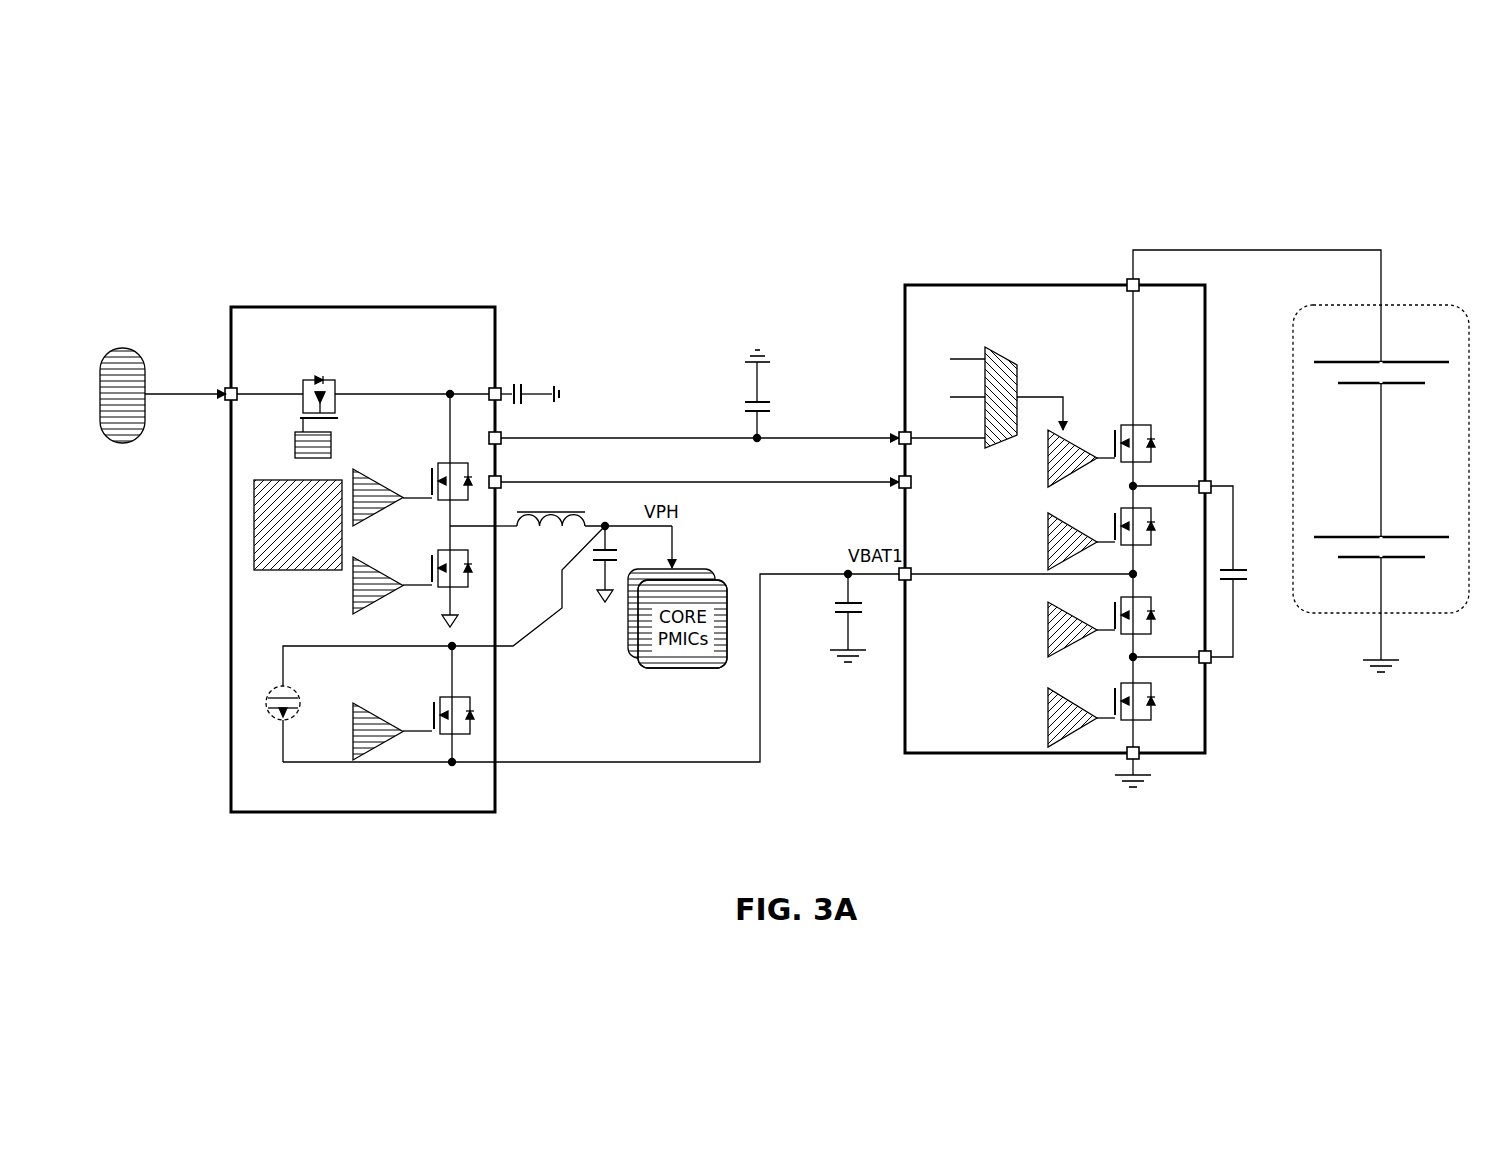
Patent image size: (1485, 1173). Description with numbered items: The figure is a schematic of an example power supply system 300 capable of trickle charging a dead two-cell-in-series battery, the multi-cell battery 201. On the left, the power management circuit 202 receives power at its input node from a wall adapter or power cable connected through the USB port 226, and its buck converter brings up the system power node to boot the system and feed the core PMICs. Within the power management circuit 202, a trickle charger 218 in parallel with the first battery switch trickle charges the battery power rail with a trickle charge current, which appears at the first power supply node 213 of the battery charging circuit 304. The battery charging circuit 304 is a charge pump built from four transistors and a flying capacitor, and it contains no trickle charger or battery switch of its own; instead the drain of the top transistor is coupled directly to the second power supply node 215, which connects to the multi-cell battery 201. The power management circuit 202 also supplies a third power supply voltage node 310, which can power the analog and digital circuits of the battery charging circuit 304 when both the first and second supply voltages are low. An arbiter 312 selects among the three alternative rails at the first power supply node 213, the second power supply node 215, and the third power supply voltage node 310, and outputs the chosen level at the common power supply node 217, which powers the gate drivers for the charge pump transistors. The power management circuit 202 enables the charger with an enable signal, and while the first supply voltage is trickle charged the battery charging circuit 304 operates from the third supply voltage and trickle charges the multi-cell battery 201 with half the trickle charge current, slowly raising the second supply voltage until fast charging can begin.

The power supply system 300 is at (1230, 161).
The power management circuit 202 is at (399, 307).
The USB port 226 is at (125, 347).
The trickle charger 218 is at (265, 700).
The third power supply voltage node 310 is at (618, 436).
The first power supply node 213 is at (900, 585).
The battery charging circuit 304 is at (965, 283).
The arbiter 312 is at (998, 360).
The common power supply node 217 is at (1030, 395).
The second power supply node 215 is at (1130, 281).
The multi-cell battery 201 is at (1405, 305).